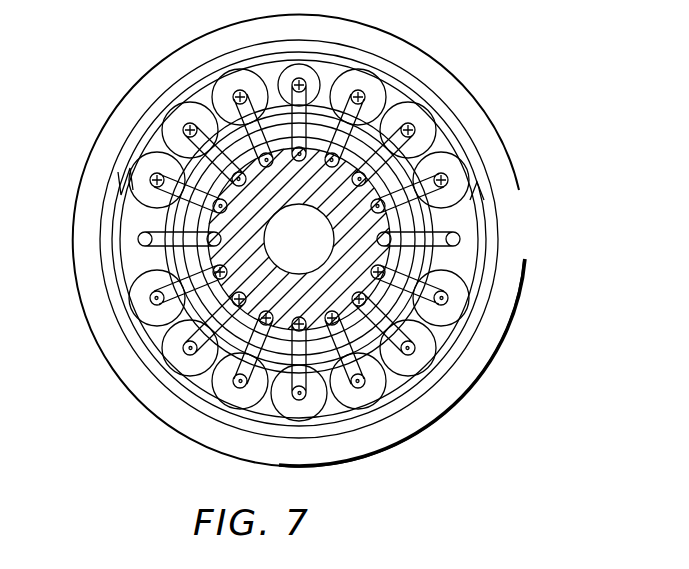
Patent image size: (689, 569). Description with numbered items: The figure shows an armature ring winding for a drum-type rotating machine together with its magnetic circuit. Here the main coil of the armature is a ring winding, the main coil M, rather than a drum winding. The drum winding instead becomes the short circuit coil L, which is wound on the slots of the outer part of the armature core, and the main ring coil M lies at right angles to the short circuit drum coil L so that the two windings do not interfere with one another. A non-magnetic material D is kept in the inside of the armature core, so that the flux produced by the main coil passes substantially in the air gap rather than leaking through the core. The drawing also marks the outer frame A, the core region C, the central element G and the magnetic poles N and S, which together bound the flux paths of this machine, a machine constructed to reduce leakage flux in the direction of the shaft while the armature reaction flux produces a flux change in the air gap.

The outer frame A is at (384, 40).
The short circuit coil L is at (145, 203).
The non-magnetic material D is at (170, 259).
The main coil M is at (176, 357).
The stator inner core C is at (262, 392).
The rotor core G is at (342, 216).
The north pole N is at (231, 120).
The south pole S is at (363, 340).